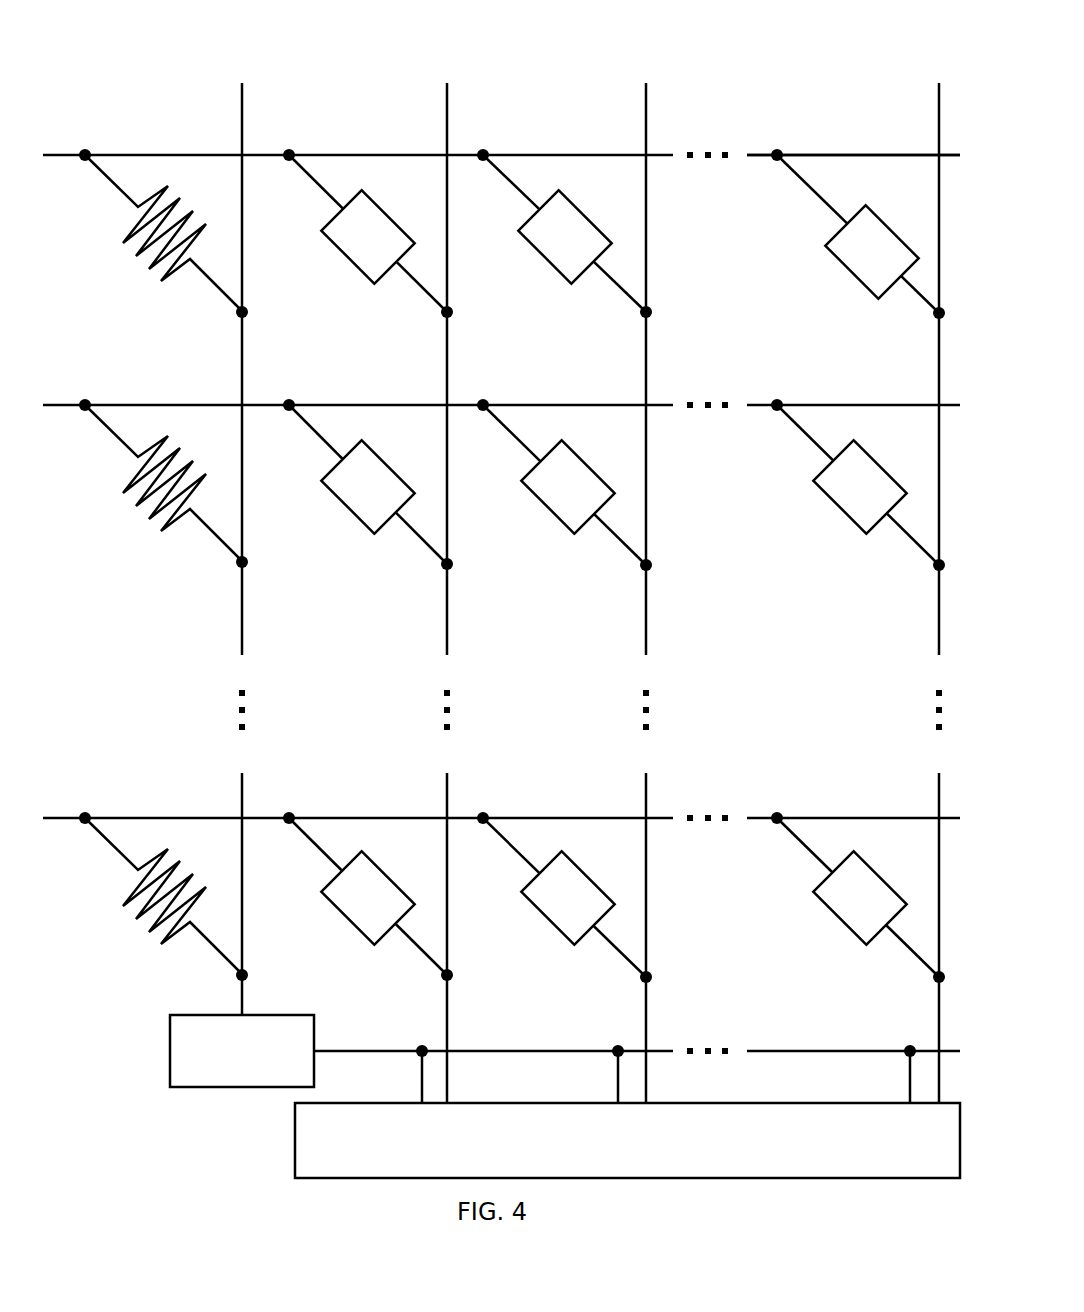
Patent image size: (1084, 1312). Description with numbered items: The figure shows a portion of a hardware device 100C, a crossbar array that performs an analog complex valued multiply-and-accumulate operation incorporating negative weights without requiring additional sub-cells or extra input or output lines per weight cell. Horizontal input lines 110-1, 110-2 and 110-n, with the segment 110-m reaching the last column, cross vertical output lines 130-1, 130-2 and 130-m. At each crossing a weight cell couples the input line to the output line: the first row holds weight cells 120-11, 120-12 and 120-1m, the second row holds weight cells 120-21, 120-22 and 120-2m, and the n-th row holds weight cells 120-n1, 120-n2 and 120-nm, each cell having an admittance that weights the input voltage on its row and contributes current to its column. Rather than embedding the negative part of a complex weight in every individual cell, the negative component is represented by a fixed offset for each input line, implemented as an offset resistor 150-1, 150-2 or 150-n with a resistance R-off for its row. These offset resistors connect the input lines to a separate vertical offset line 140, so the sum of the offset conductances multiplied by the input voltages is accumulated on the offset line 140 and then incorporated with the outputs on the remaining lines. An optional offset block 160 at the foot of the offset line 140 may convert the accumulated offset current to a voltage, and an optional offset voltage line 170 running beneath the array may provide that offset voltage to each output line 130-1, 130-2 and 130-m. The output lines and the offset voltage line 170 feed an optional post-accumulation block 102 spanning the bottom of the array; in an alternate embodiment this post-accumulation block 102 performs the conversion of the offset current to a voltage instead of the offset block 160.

The hardware device 100C is at (526, 22).
The offset line 140 is at (242, 137).
The output line 130-1 is at (447, 137).
The output line 130-2 is at (646, 130).
The output line 130-m is at (939, 120).
The input line 110-1 is at (340, 155).
The input line 110-2 is at (372, 402).
The input line 110-n is at (372, 815).
The input line 110-m is at (858, 155).
The offset resistor 150-1 is at (120, 268).
The offset resistor 150-2 is at (120, 518).
The offset resistor 150-n is at (120, 929).
The weight cell 120-11 is at (333, 243).
The weight cell 120-12 is at (530, 243).
The weight cell 120-1m is at (837, 253).
The weight cell 120-21 is at (333, 493).
The weight cell 120-22 is at (535, 495).
The weight cell 120-2m is at (828, 497).
The weight cell 120-n1 is at (333, 904).
The weight cell 120-n2 is at (535, 906).
The weight cell 120-nm is at (828, 908).
The offset block 160 is at (242, 1051).
The offset voltage line 170 is at (380, 1051).
The post-accumulation block 102 is at (627, 1140).